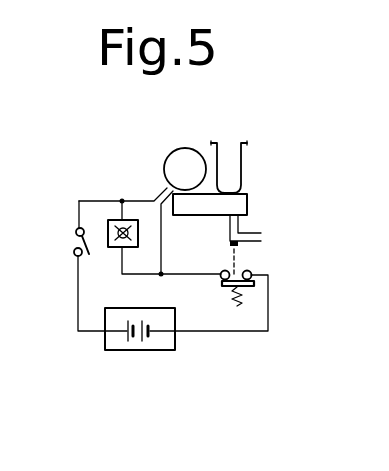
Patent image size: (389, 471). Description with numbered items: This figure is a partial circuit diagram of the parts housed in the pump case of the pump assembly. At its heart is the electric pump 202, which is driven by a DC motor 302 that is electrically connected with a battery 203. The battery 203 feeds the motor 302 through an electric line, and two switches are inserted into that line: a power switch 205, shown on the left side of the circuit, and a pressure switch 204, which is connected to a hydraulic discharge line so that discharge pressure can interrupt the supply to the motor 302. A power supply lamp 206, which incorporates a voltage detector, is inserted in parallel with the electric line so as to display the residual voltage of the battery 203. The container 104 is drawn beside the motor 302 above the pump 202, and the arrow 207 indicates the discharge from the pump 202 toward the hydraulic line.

The DC motor 302 is at (180, 161).
The container 104 is at (233, 166).
The electric pump 202 is at (236, 201).
The discharge direction 207 is at (268, 238).
The power supply lamp 206 is at (118, 219).
The power switch 205 is at (73, 246).
The pressure switch 204 is at (247, 292).
The battery 203 is at (143, 350).